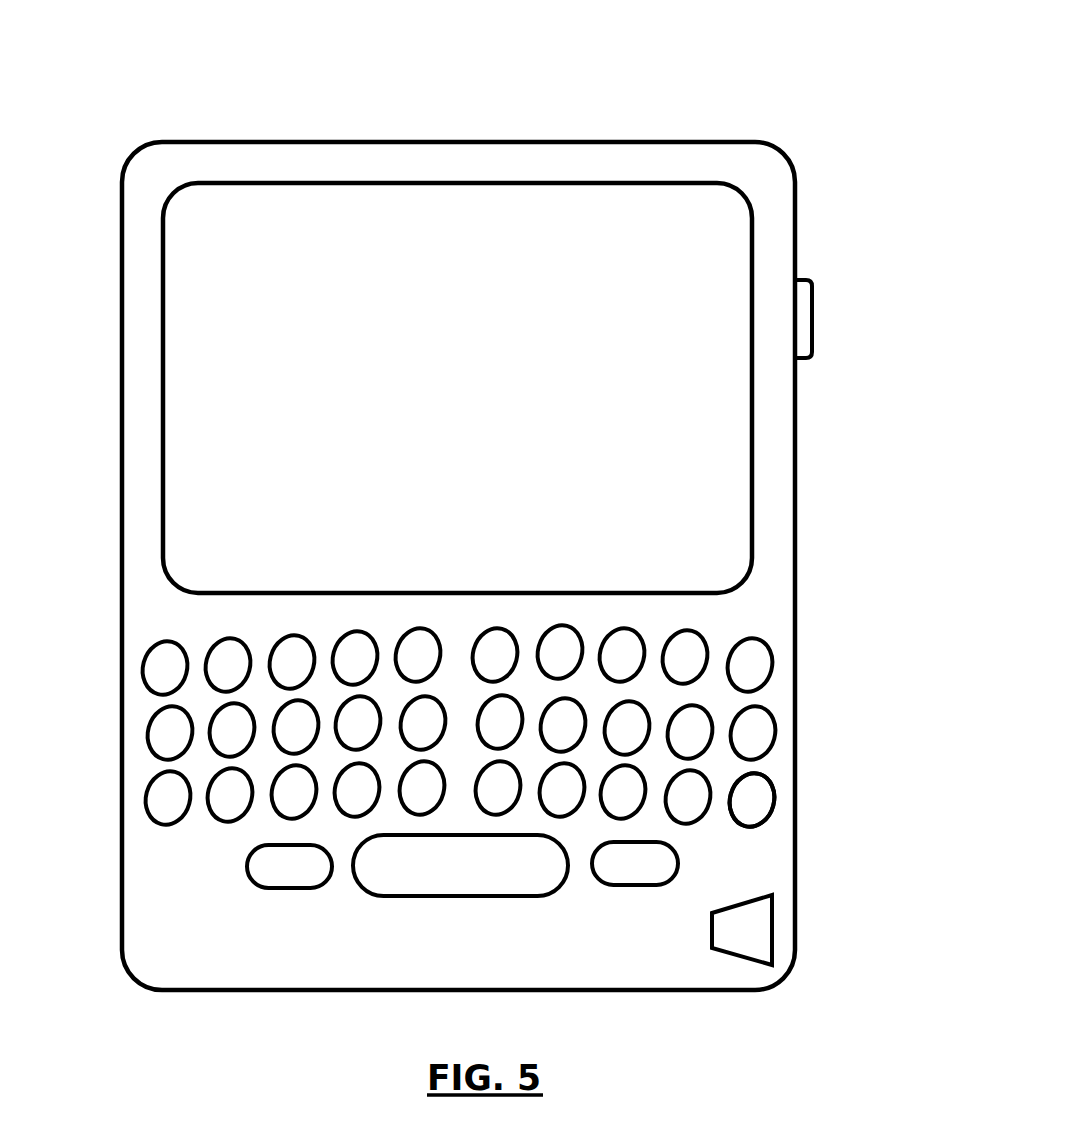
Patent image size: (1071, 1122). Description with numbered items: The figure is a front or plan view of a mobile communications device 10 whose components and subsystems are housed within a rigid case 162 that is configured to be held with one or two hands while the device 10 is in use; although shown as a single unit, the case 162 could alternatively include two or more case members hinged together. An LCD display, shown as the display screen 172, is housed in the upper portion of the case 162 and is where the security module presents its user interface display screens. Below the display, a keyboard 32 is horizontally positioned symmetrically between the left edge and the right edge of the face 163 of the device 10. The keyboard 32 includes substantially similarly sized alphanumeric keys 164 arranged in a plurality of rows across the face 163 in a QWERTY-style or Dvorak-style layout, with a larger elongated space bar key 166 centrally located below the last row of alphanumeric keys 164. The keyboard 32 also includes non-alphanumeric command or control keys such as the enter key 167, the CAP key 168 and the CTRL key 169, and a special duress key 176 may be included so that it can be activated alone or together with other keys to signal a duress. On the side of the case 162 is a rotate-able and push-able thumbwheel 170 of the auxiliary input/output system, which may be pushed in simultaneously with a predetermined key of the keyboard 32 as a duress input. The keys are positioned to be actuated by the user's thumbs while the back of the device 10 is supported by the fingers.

The mobile device 10 is at (582, 142).
The case 162 is at (391, 388).
The display screen 172 is at (163, 325).
The thumbwheel 170 is at (813, 321).
The keyboard 32 is at (453, 711).
The face 163 is at (172, 622).
The alphanumeric keys 164 is at (713, 713).
The enter key 167 is at (772, 804).
The CTRL key 169 is at (290, 882).
The space bar key 166 is at (460, 868).
The CAP key 168 is at (680, 858).
The duress key 176 is at (773, 928).